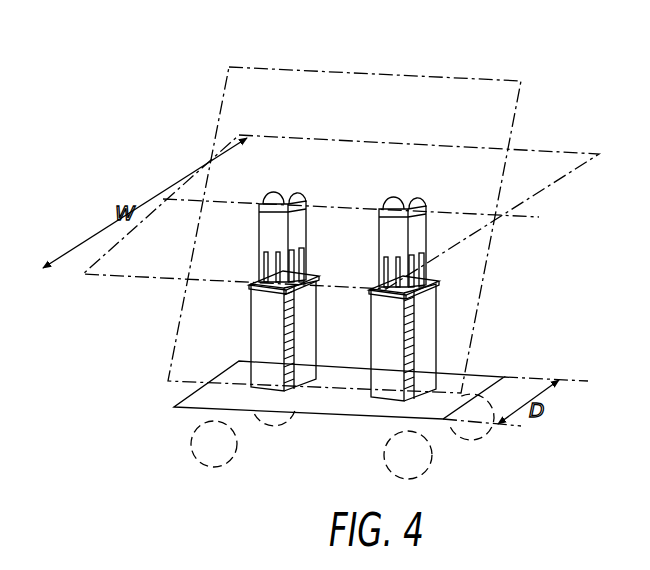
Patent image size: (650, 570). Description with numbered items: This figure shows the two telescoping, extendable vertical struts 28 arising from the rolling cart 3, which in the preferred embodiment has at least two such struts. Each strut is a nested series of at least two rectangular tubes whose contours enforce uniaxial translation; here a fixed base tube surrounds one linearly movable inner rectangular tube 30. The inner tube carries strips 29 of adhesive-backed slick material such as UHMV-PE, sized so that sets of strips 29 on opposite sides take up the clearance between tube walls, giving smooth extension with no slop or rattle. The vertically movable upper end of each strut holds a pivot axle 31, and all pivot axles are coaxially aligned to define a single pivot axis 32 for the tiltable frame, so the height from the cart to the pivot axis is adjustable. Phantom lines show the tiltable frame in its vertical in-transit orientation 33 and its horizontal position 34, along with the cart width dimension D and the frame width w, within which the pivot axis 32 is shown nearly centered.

The rolling cart 3 is at (313, 419).
The vertical struts 28 is at (438, 342).
The strips 29 is at (440, 275).
The inner rectangular tube 30 is at (440, 237).
The pivot axle 31 is at (404, 202).
The pivot axis 32 is at (190, 199).
The vertical in-transit orientation 33 is at (497, 79).
The horizontal position 34 is at (529, 150).